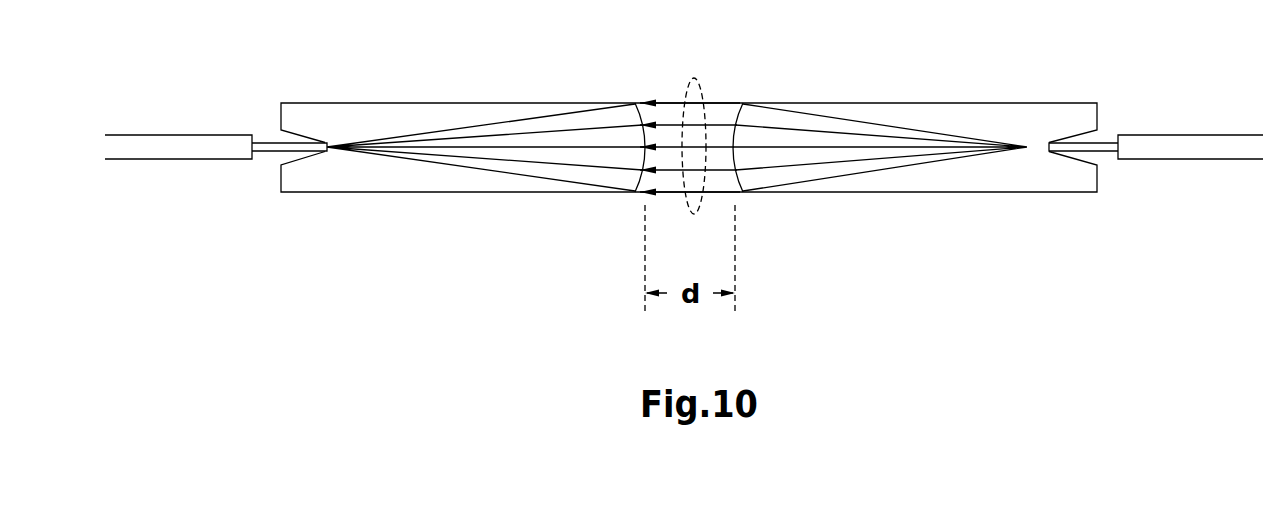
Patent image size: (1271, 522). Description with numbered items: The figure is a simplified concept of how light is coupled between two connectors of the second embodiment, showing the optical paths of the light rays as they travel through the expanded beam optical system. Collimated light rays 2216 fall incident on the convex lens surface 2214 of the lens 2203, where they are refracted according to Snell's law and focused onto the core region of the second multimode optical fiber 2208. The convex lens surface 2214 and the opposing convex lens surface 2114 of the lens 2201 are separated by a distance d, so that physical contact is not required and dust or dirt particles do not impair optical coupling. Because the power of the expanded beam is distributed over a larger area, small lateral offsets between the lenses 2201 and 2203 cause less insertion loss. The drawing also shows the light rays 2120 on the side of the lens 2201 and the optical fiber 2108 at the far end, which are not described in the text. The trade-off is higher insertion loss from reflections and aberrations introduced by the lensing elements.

The second multimode optical fiber 2208 is at (267, 146).
The lens 2203 is at (378, 112).
The collimated light rays 2216 is at (485, 120).
The convex lens surface 2114 is at (738, 108).
The light beam 2120 is at (822, 112).
The lens 2201 is at (938, 117).
The second optical fiber 2108 is at (1103, 146).
The convex lens surface 2214 is at (643, 183).